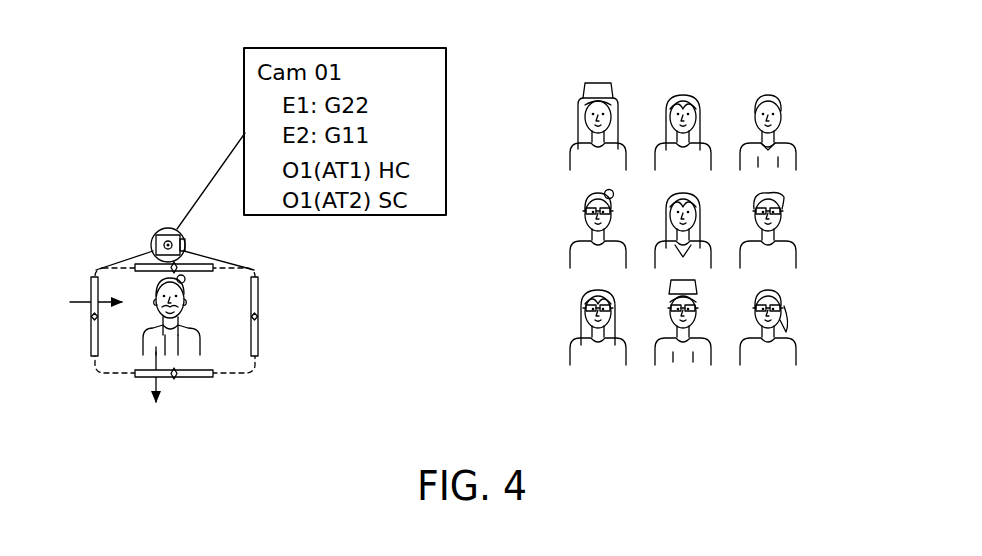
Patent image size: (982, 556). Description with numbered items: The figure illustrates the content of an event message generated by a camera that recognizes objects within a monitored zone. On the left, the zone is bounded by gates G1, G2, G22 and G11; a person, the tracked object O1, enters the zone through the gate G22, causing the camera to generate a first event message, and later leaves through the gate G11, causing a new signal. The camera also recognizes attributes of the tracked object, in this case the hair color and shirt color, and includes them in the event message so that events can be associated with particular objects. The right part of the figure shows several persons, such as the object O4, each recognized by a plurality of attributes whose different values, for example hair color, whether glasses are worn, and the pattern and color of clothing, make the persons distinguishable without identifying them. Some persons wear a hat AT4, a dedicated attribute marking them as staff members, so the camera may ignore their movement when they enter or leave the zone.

The gate region top G1 is at (152, 263).
The gate region bottom G11 is at (187, 380).
The gate region left G22 is at (91, 328).
The gate region right G2 is at (258, 303).
The tracked object (person) O1 is at (200, 343).
The object candidate O4 is at (599, 227).
The attribute (hat) AT4 is at (601, 76).